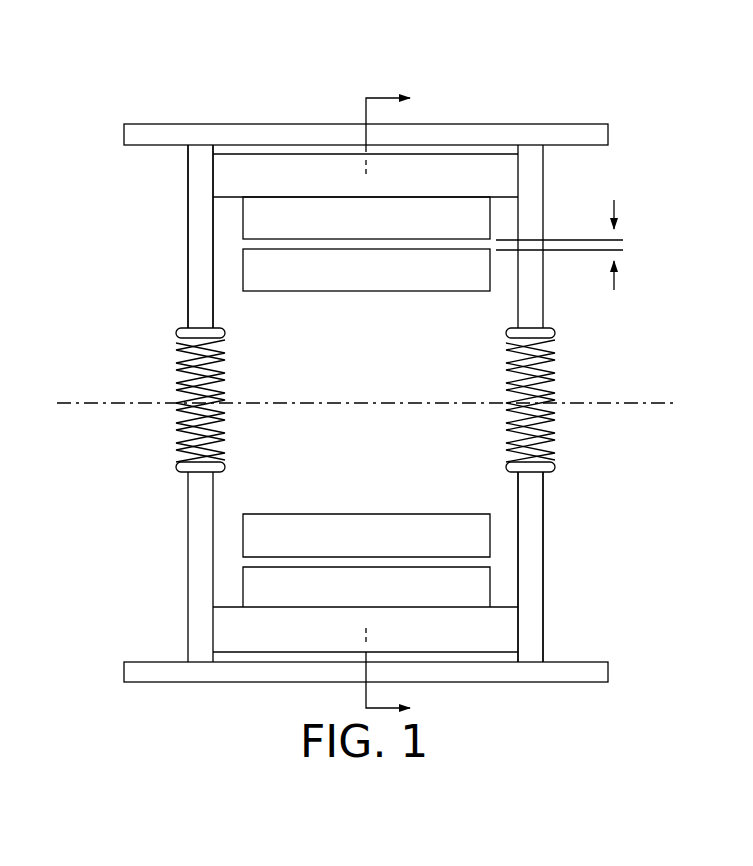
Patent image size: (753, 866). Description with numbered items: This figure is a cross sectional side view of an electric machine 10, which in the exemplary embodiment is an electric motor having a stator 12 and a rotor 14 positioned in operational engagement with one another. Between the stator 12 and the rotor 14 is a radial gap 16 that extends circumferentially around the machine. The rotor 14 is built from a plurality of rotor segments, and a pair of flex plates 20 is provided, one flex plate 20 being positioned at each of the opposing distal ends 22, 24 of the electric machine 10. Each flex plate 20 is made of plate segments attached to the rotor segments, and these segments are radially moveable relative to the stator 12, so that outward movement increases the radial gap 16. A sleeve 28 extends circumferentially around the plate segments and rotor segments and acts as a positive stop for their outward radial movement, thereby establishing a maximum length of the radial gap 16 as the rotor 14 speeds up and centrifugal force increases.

The electric machine 10 is at (104, 88).
The stator 12 is at (366, 270).
The rotor 14 is at (366, 218).
The radial gap 16 is at (614, 200).
The flex plate 20 is at (533, 193).
The distal end 22 is at (188, 247).
The distal end 24 is at (543, 627).
The sleeve 28 is at (588, 670).